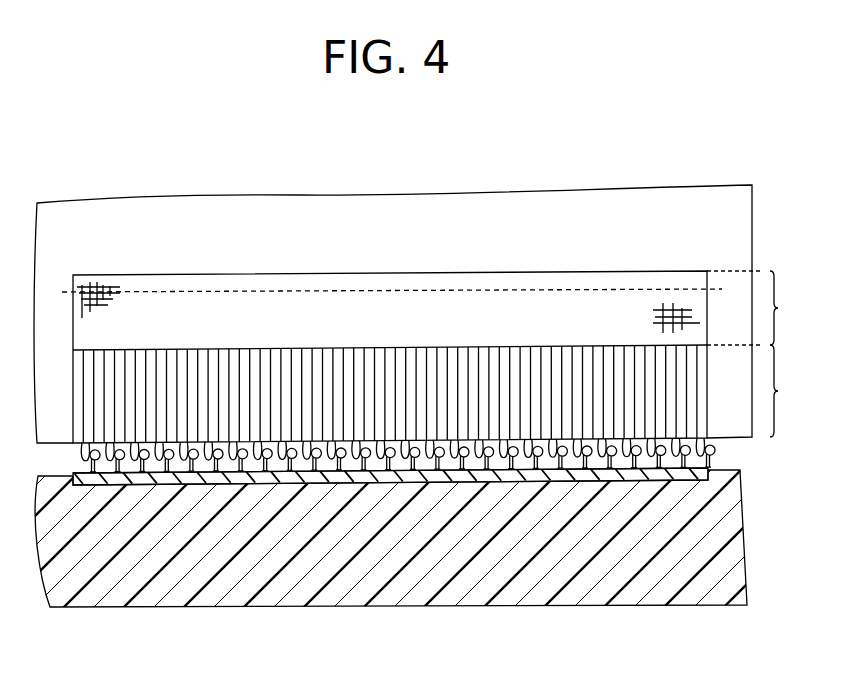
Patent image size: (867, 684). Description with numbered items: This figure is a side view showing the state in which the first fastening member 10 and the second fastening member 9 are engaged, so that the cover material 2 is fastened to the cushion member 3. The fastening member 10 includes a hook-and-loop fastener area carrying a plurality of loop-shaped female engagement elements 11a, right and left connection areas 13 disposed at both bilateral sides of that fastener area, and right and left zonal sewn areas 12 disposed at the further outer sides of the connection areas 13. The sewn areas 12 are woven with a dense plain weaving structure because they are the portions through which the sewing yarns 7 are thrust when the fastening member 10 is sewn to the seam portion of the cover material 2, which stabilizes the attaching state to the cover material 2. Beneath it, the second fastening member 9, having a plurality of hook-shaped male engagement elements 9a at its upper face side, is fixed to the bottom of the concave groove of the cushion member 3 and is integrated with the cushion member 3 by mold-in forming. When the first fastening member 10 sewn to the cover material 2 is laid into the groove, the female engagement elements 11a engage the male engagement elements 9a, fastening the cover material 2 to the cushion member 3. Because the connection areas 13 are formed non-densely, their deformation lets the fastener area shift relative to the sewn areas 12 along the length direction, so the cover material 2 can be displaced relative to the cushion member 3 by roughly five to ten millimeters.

The cover material 2 is at (560, 210).
The cushion member 3 is at (533, 594).
The sewing yarns 7 is at (390, 292).
The second fastening member 9 is at (692, 477).
The male engagement elements 9a is at (710, 465).
The fastening member 10 is at (288, 274).
The female engagement elements 11a is at (710, 440).
The sewn areas 12 is at (443, 310).
The connection areas 13 is at (447, 394).